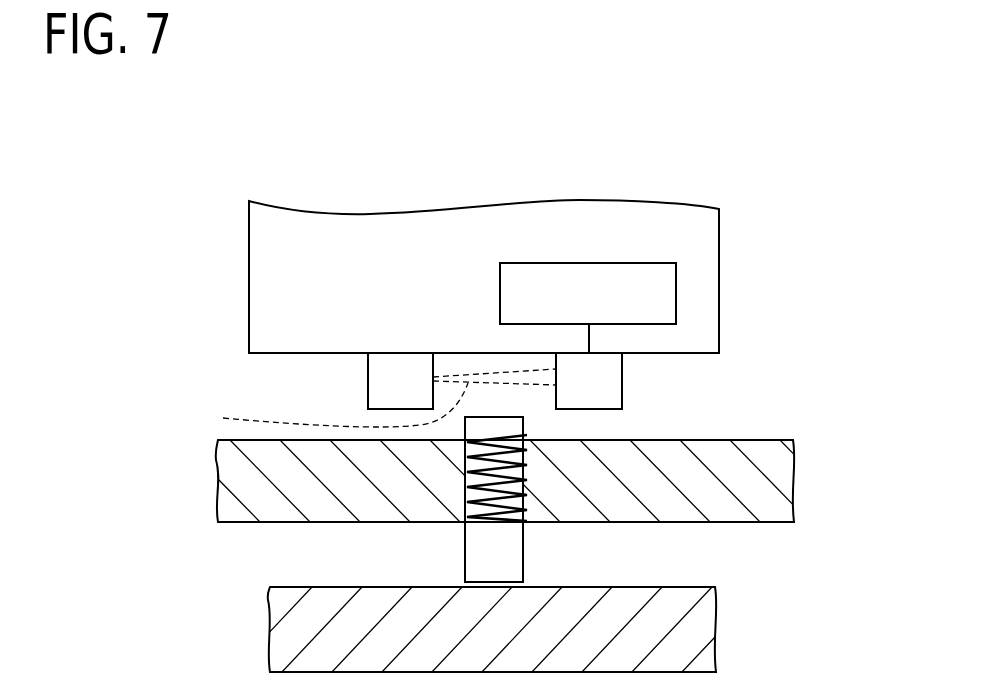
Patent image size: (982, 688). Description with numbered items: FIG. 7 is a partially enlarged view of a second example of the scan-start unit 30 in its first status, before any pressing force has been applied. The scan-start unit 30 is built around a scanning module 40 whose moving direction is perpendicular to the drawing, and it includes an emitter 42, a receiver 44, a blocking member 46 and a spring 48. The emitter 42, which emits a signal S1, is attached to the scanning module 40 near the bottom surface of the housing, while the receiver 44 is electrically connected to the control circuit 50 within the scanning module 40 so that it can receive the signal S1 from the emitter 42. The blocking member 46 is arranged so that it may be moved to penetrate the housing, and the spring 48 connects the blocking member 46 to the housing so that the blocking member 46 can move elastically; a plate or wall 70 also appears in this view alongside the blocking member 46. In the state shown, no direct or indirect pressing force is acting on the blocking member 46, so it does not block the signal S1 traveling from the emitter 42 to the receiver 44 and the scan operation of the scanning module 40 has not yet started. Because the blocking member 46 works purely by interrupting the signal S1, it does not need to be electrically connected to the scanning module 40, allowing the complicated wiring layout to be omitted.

The scan-start unit 30 is at (571, 315).
The scanning module 40 is at (268, 270).
The emitter 42 is at (385, 383).
The receiver 44 is at (622, 378).
The blocking member 46 is at (523, 544).
The spring 48 is at (463, 533).
The control circuit 50 is at (662, 303).
The plate / wall 70 is at (228, 473).
The signal S1 is at (370, 401).